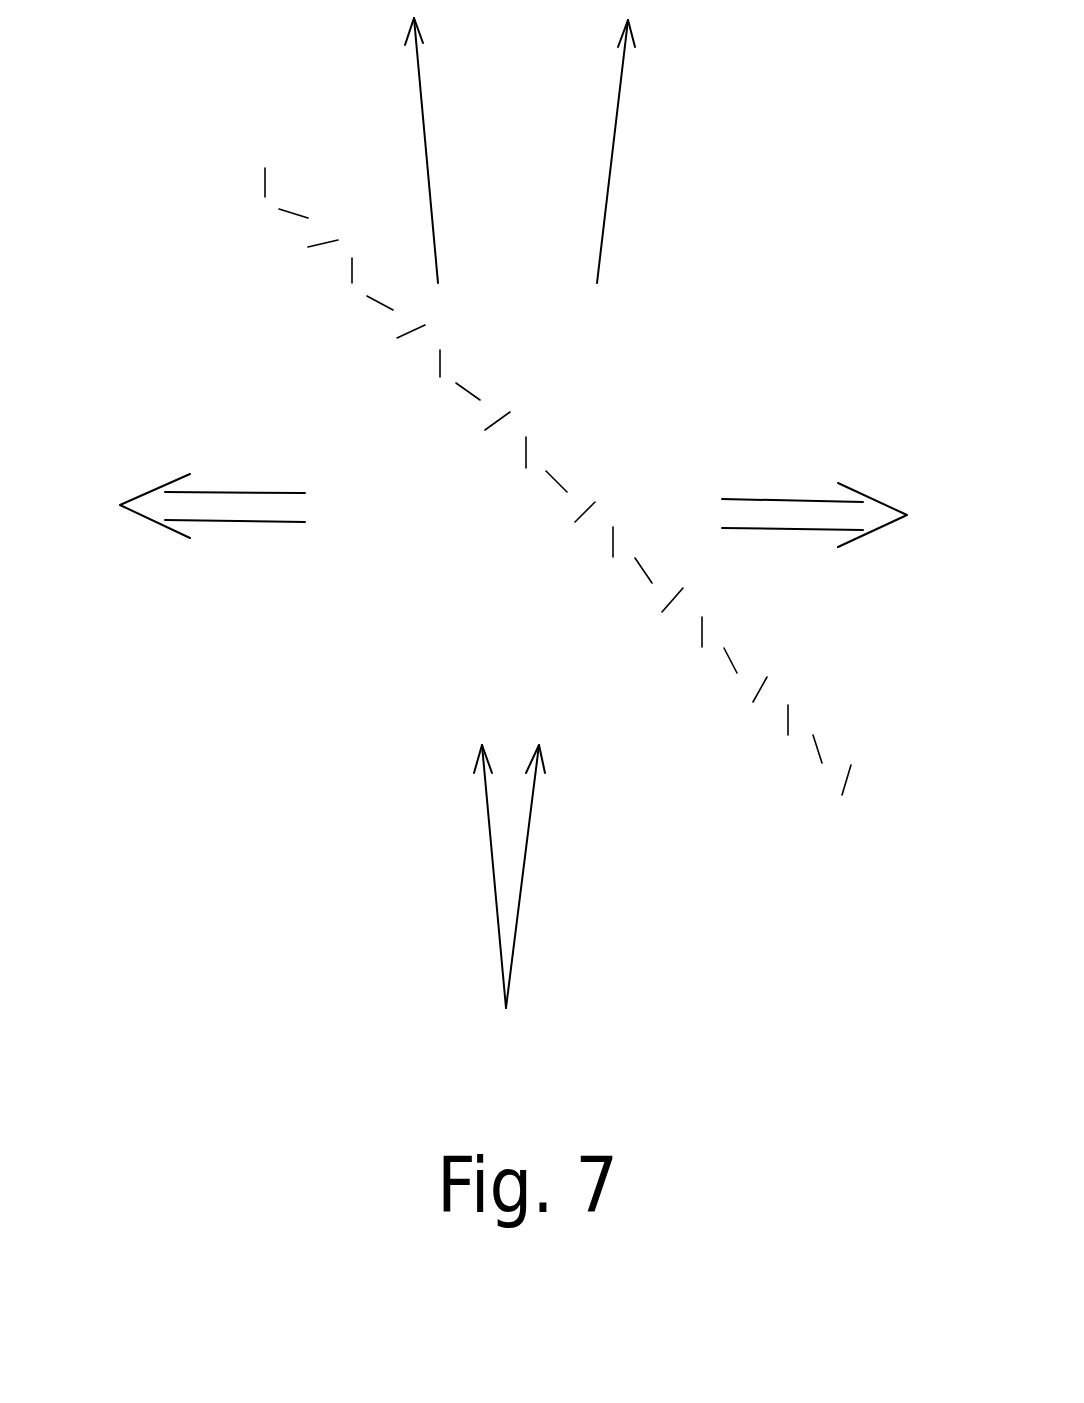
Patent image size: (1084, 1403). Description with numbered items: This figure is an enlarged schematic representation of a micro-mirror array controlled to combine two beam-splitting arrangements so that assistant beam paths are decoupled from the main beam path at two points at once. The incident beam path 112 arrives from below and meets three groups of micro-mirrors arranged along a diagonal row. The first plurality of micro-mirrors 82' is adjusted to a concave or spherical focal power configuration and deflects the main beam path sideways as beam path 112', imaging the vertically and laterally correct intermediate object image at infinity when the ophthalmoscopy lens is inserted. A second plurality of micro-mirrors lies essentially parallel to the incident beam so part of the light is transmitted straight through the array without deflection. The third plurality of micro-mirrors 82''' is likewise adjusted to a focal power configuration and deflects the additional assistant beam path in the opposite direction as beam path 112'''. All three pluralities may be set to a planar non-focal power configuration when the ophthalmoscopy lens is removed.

The first plurality of micro-mirrors 82' is at (560, 483).
The third plurality of micro-mirrors 82''' is at (699, 658).
The incident beam path 112 is at (580, 876).
The beam path 112' is at (252, 525).
The beam path 112''' is at (827, 546).